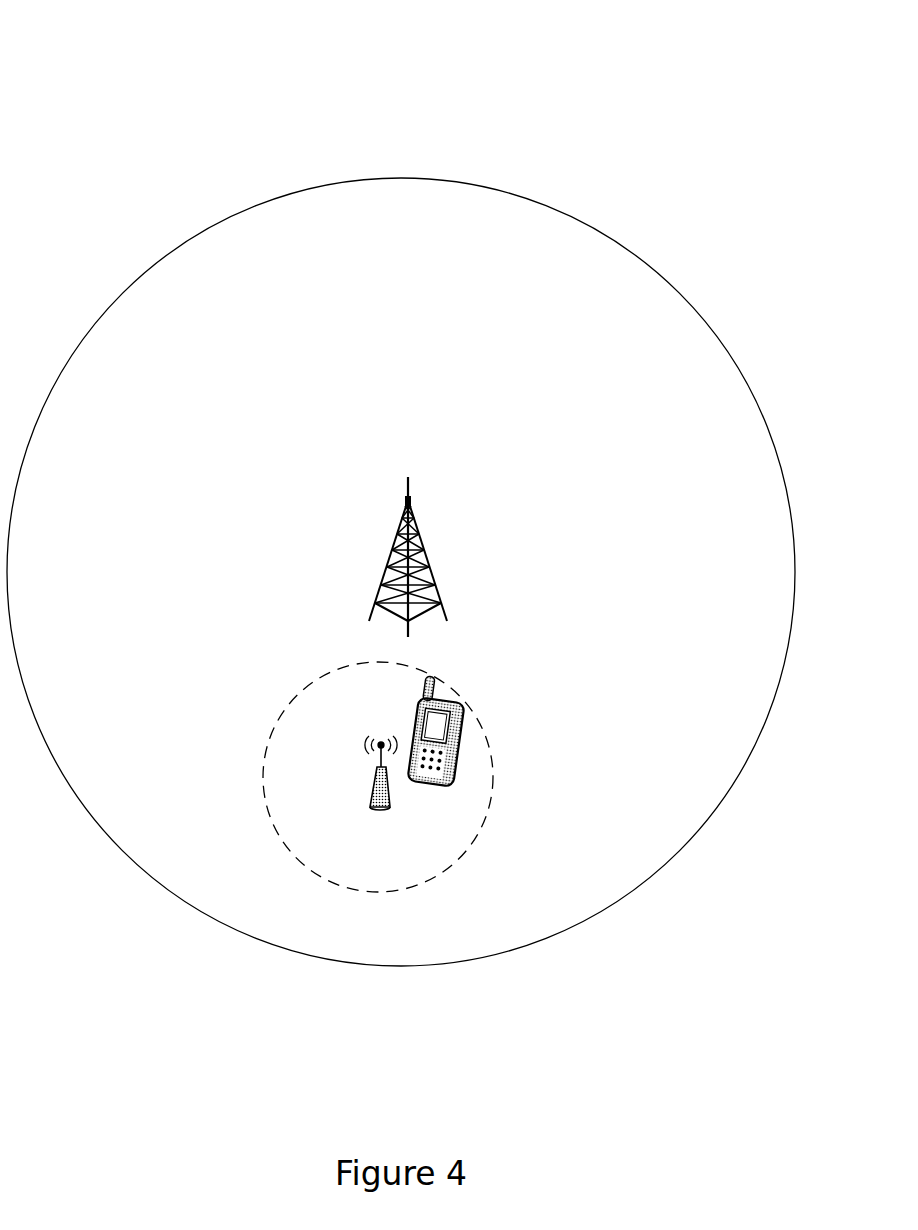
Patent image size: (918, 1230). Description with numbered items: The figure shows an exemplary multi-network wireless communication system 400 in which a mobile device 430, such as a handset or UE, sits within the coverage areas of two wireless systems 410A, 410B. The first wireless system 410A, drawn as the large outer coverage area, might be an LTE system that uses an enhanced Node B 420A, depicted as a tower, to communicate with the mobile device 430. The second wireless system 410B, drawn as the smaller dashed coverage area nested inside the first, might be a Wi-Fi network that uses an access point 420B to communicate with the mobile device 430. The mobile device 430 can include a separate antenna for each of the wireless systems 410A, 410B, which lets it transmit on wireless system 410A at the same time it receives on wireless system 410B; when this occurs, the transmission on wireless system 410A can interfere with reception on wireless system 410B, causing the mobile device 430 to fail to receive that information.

The multi-network wireless communication system 400 is at (706, 125).
The wireless system 410A is at (422, 218).
The wireless system 410B is at (402, 882).
The enhanced Node B 420A is at (532, 406).
The access point 420B is at (267, 856).
The mobile device 430 is at (517, 841).